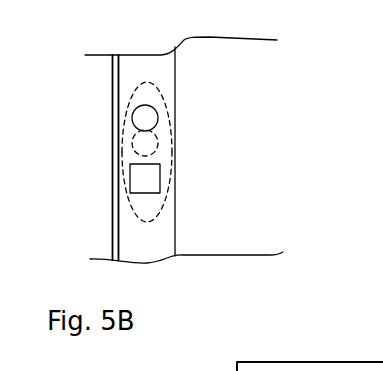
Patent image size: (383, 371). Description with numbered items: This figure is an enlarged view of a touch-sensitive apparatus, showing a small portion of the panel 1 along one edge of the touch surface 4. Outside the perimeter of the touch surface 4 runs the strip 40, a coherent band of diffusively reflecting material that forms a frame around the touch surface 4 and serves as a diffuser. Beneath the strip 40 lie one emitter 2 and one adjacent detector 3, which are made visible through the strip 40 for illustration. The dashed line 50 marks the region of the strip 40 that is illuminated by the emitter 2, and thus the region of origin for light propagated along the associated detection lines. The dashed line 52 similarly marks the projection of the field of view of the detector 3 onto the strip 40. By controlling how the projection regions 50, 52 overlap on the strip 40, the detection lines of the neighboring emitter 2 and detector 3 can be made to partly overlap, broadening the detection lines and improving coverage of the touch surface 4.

The strip 40 is at (143, 67).
The touch surface 4 is at (235, 192).
The panel 1 is at (112, 238).
The dashed line indicating emitter illumination region 50 is at (128, 93).
The dashed line indicating detector field of view projection 52 is at (127, 210).
The emitter 2 is at (142, 120).
The detector 3 is at (137, 183).